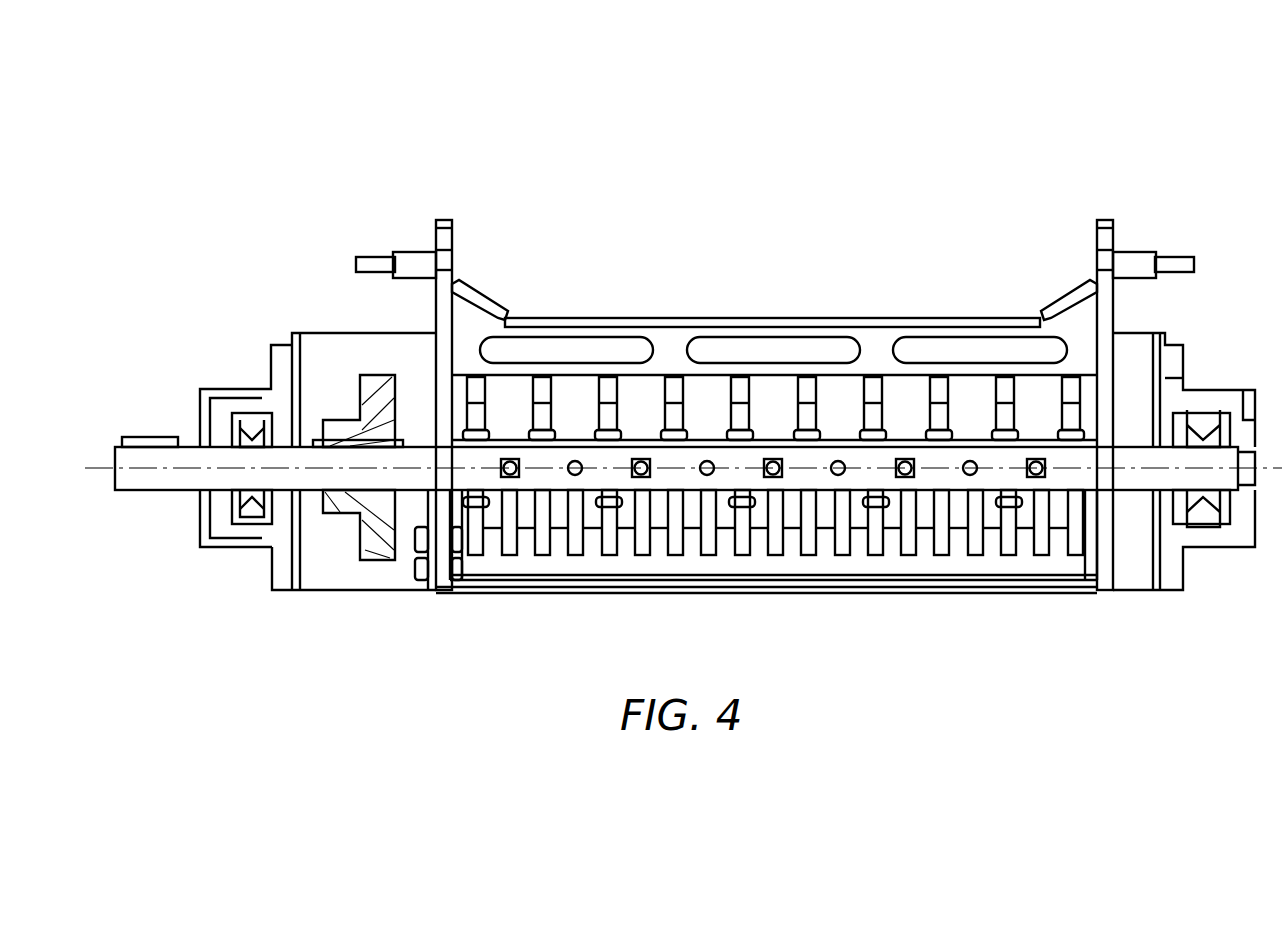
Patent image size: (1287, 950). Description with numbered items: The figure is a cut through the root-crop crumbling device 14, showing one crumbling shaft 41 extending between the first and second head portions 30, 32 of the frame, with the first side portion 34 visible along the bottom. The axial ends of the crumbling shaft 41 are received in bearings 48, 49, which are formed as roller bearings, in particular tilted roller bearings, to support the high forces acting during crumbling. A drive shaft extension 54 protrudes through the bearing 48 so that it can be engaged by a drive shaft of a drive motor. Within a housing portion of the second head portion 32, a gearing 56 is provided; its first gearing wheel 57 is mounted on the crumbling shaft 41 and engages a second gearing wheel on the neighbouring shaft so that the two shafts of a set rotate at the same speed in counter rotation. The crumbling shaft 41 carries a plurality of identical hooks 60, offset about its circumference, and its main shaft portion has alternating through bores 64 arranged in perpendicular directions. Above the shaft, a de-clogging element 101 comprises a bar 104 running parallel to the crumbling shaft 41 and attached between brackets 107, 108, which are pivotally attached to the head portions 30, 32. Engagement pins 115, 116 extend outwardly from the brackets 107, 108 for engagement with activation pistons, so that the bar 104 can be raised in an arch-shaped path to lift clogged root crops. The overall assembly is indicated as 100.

The device 14 is at (335, 105).
The electric motor/generator 100 is at (1052, 158).
The first head portion 30 is at (1135, 594).
The second head portion 32 is at (440, 592).
The first side portion 34 is at (782, 594).
The crumbling shaft 41 is at (725, 482).
The bearing 48 is at (222, 548).
The bearing 49 is at (1218, 548).
The drive shaft extension 54 is at (140, 437).
The gearing 56 is at (355, 592).
The first gearing wheel 57 is at (375, 400).
The hooks 60 is at (873, 390).
The through bore 64 is at (905, 478).
The de-clogging element 101 is at (487, 300).
The bar 104 is at (660, 318).
The bracket 107 is at (442, 216).
The bracket 108 is at (1105, 216).
The engagement pin 115 is at (376, 255).
The engagement pin 116 is at (1178, 255).